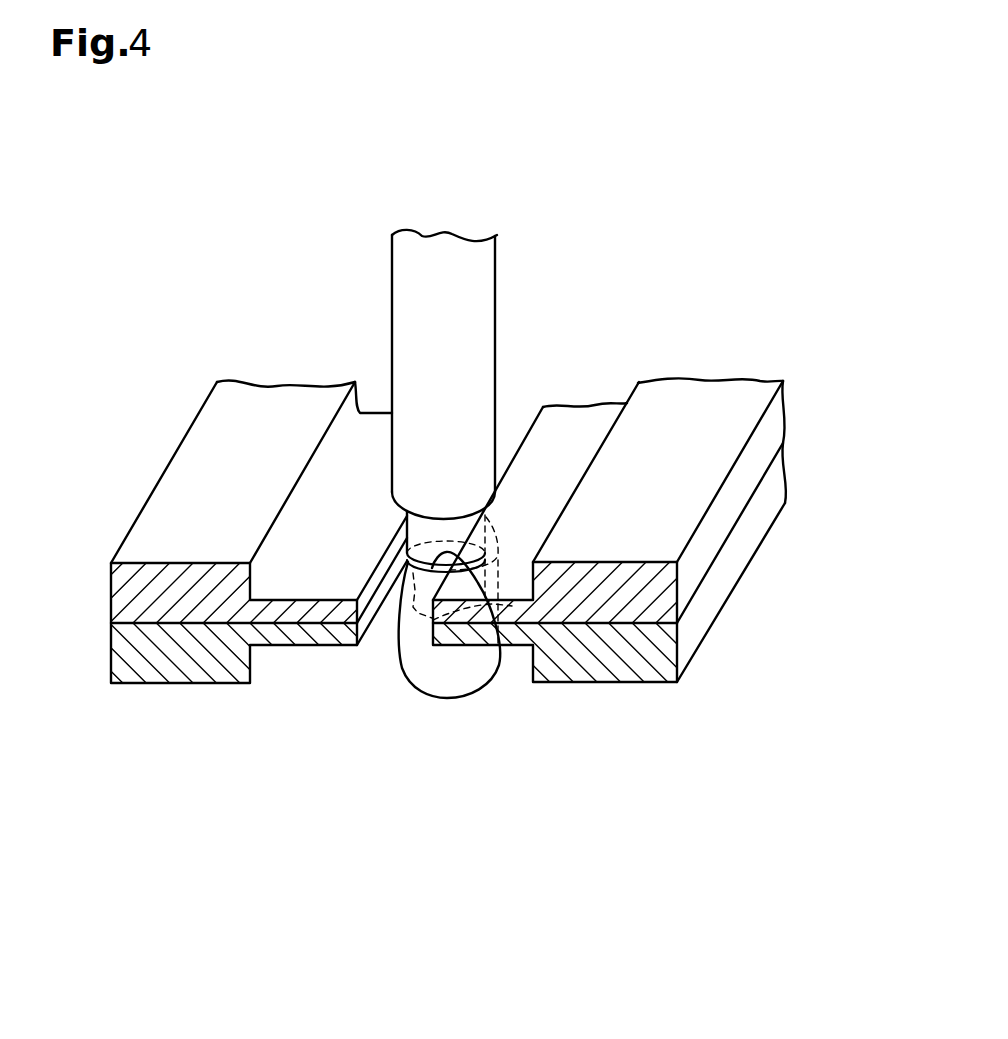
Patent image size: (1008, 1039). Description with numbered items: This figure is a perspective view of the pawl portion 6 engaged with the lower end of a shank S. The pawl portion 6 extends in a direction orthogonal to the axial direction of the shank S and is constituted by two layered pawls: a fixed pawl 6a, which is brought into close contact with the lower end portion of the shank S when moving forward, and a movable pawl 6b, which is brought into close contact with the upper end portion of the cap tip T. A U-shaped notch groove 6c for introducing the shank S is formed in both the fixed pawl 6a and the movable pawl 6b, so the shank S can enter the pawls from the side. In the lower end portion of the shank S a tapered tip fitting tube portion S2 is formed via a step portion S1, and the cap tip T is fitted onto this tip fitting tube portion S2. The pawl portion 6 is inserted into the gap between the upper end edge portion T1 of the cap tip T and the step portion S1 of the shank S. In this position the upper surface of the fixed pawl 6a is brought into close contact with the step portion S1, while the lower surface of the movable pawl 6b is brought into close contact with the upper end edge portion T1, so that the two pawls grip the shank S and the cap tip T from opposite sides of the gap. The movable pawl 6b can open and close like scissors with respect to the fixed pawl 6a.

The shank S is at (497, 288).
The step portion S1 is at (393, 510).
The tip fitting tube portion S2 is at (407, 553).
The cap tip T is at (415, 698).
The upper end edge portion T1 is at (492, 620).
The pawl portion 6 is at (737, 608).
The fixed pawl 6a is at (143, 508).
The movable pawl 6b is at (112, 667).
The U-shaped notch groove 6c is at (358, 626).